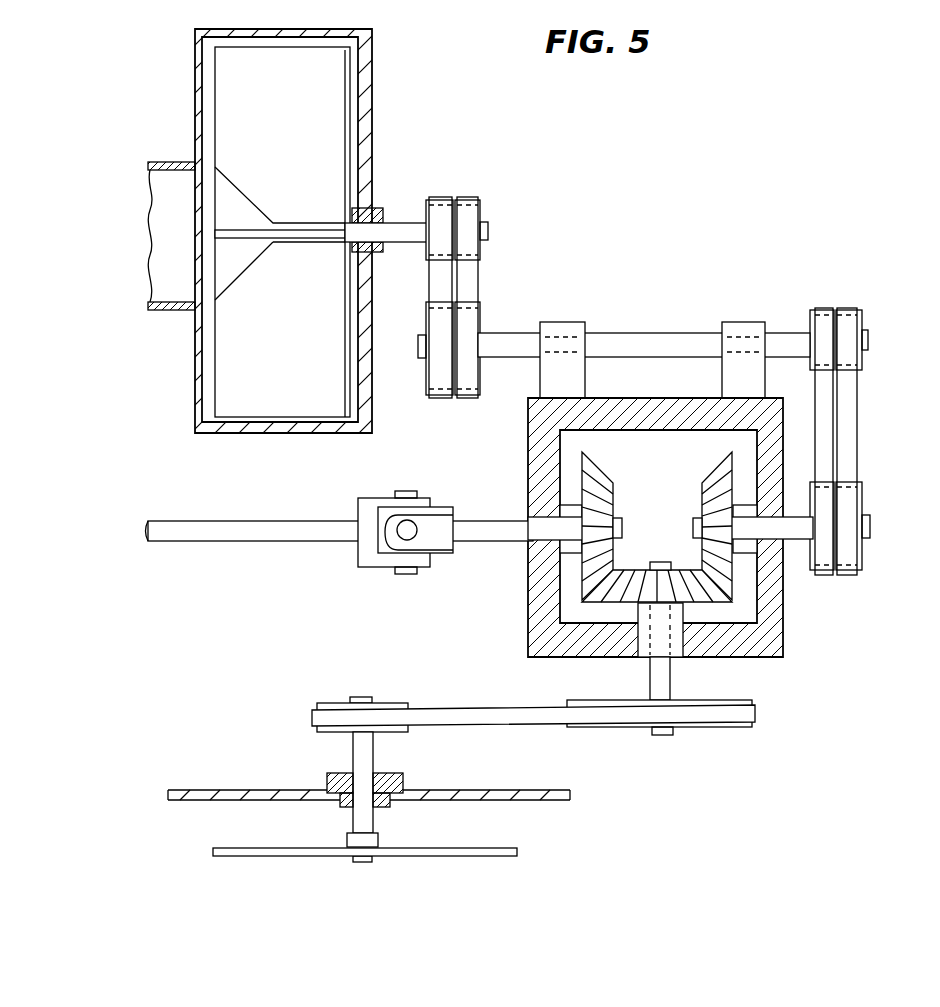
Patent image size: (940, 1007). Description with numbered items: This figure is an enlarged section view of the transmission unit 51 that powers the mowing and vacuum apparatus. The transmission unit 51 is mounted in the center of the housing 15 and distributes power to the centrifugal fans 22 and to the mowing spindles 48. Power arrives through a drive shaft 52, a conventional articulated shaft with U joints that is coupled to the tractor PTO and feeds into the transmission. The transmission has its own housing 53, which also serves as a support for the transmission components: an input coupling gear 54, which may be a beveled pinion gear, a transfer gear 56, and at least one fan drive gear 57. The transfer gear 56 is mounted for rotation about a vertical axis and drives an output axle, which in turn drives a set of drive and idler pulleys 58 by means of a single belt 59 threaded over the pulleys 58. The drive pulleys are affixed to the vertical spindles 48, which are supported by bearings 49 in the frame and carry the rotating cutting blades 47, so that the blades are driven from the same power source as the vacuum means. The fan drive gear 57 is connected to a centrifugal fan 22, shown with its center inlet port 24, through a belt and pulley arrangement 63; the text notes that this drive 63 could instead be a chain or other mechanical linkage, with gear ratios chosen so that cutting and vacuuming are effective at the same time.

The housing 15 is at (203, 783).
The centrifugal fan 22 is at (200, 367).
The center inlet port 24 is at (172, 300).
The rotating cutting blade 47 is at (245, 848).
The vertical spindle 48 is at (360, 750).
The bearing 49 is at (393, 773).
The transmission unit 51 is at (632, 392).
The drive shaft 52 is at (250, 537).
The housing 53 is at (528, 598).
The input coupling gear 54 is at (617, 500).
The transfer gear 56 is at (635, 572).
The fan drive gear 57 is at (712, 495).
The drive and idler pulleys 58 is at (390, 703).
The belt 59 is at (460, 712).
The belt and pulley arrangement 63 is at (472, 289).